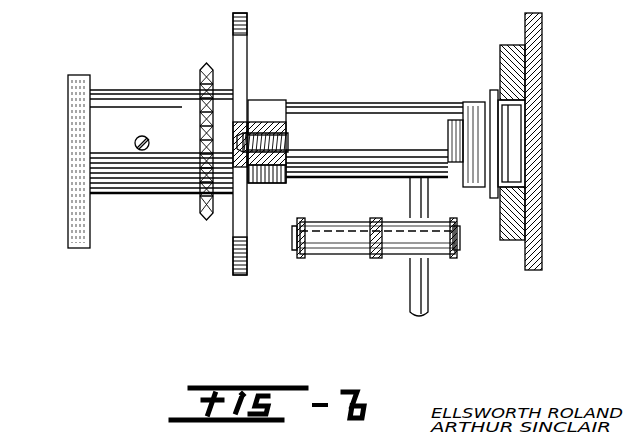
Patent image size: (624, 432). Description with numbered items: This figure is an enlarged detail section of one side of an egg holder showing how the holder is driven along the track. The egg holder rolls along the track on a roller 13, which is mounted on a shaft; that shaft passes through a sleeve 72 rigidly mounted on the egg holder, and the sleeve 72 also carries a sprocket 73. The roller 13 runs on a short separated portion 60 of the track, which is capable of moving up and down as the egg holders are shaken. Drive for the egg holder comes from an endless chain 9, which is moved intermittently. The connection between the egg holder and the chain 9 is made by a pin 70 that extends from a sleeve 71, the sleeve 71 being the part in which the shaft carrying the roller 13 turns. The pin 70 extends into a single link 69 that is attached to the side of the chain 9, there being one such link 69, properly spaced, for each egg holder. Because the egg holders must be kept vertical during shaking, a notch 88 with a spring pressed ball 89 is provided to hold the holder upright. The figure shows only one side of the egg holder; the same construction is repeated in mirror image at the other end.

The sleeve 72 is at (103, 88).
The sprocket 73 is at (200, 75).
The spring pressed ball 89 is at (253, 122).
The notch 88 is at (240, 142).
The sleeve 71 is at (352, 103).
The roller 13 is at (513, 133).
The separated portion of track 60 is at (500, 55).
The pin 70 is at (410, 297).
The endless chain 9 is at (340, 258).
The link 69 is at (447, 258).